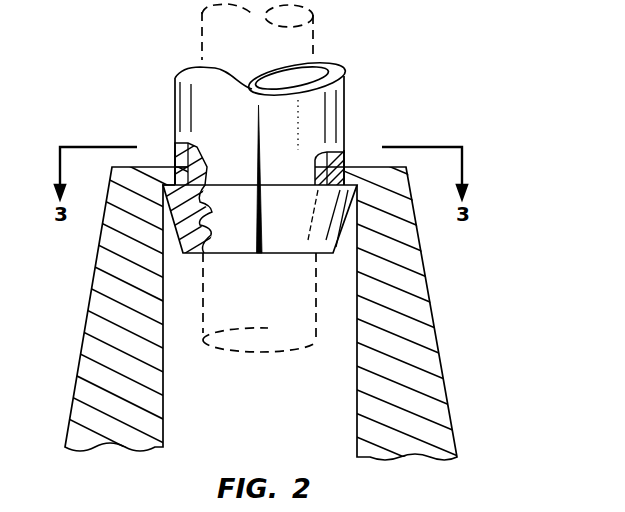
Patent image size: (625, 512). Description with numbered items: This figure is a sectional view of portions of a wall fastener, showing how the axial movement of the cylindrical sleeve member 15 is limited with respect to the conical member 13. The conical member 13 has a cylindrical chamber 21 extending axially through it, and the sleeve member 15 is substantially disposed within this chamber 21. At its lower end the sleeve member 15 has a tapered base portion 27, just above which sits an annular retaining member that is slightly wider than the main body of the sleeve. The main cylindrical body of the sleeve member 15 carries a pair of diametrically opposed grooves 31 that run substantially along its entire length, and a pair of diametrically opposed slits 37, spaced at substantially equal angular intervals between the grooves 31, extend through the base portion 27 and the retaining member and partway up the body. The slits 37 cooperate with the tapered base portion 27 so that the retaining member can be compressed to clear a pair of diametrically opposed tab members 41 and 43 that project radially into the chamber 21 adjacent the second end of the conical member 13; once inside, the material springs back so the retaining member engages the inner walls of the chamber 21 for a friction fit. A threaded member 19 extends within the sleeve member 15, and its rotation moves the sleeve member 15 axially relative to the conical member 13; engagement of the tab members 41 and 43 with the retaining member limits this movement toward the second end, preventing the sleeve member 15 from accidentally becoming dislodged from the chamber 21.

The conical member 13 is at (432, 378).
The cylindrical sleeve member 15 is at (332, 100).
The threaded member 19 is at (302, 37).
The cylindrical chamber 21 is at (272, 415).
The tapered base portion 27 is at (318, 245).
The grooves 31 is at (190, 153).
The slits 37 is at (259, 255).
The tab member 41 is at (186, 151).
The tab member 43 is at (322, 172).